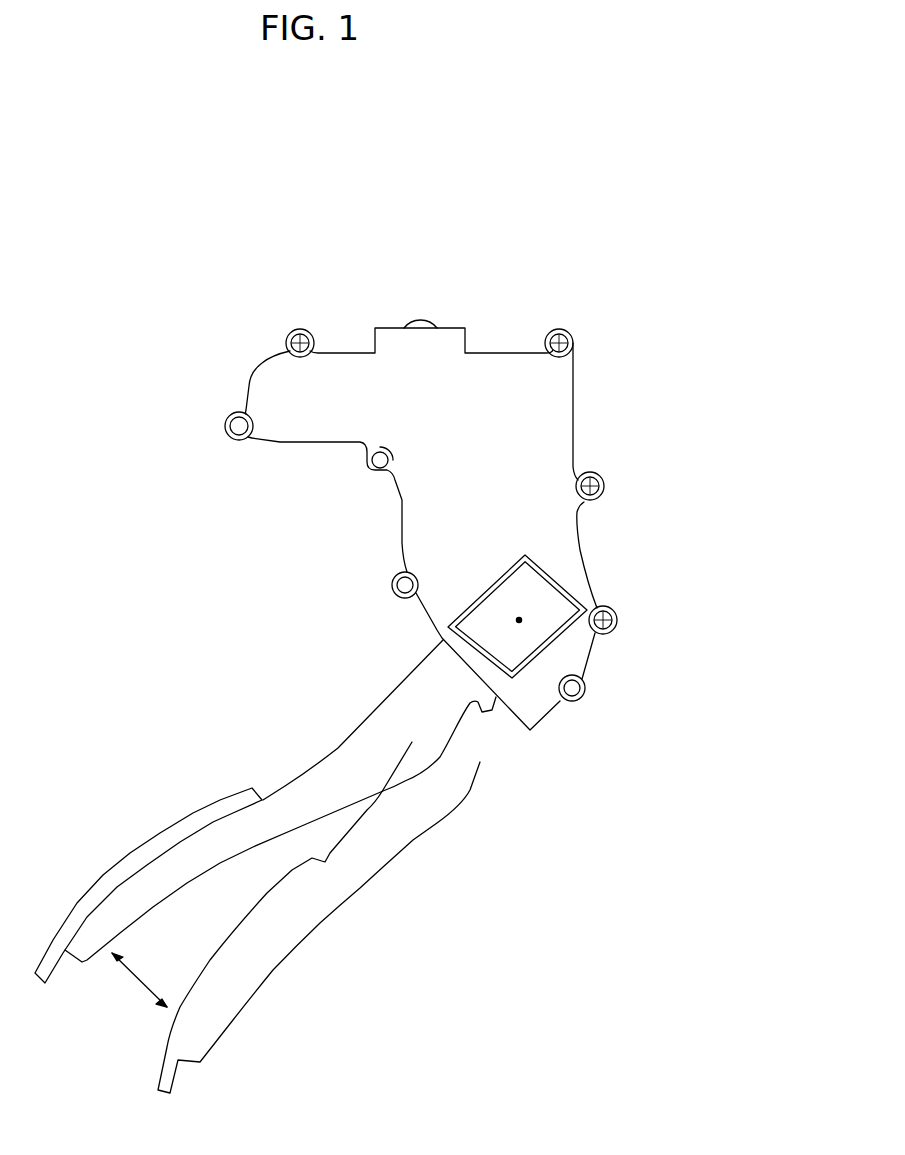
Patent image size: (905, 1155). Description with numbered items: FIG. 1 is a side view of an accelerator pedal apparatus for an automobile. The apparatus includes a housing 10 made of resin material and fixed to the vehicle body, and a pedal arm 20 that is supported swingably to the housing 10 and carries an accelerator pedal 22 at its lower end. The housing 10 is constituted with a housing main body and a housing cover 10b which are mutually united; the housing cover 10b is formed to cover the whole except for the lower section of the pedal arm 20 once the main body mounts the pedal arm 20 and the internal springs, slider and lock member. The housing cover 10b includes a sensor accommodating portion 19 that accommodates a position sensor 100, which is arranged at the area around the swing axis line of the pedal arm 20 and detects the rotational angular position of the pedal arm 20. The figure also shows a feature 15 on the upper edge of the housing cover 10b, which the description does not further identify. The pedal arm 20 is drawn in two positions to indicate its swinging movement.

The housing 10 is at (405, 500).
The housing cover 10b is at (263, 384).
The connector portion 15 is at (432, 321).
The sensor accommodating portion 19 is at (477, 600).
The position sensor 100 is at (513, 606).
The pedal arm 20 is at (338, 748).
The accelerator pedal 22 is at (177, 833).